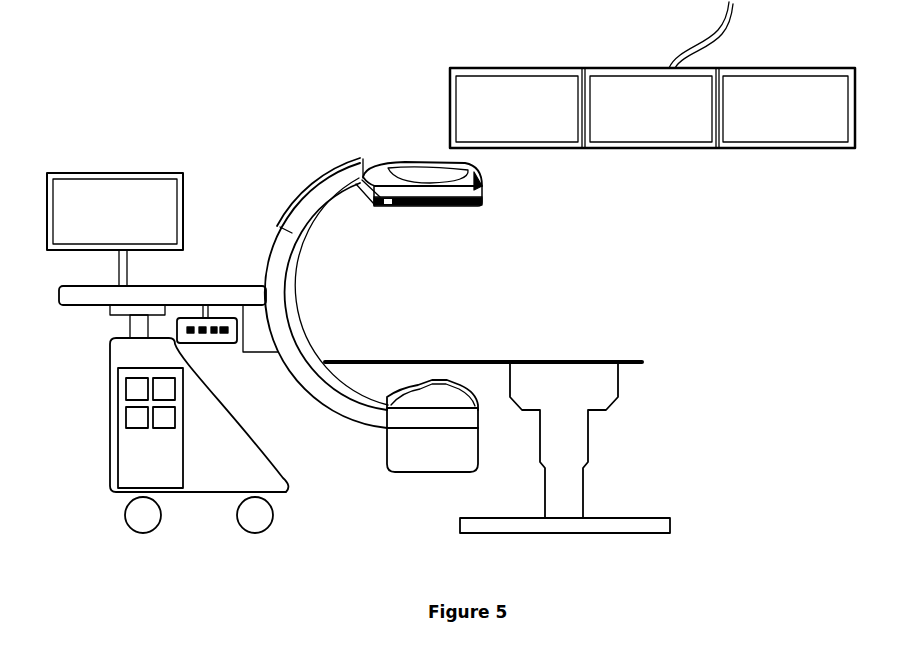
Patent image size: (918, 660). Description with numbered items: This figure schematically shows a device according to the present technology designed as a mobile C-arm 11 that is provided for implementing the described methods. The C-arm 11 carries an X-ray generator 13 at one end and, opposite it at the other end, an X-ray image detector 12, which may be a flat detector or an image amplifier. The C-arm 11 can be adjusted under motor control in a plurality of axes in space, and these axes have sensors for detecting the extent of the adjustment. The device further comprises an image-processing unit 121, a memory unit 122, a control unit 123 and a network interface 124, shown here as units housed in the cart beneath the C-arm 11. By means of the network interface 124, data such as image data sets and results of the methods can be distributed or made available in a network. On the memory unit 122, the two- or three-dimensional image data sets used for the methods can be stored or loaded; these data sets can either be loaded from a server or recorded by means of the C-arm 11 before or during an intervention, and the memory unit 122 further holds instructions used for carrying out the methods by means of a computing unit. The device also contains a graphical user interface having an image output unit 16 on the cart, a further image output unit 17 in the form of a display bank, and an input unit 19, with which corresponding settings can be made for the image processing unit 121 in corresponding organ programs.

The mobile C-arm 11 is at (322, 143).
The X-ray image detector 12 is at (472, 208).
The X-ray generator 13 is at (417, 455).
The image output unit 16 is at (165, 172).
The image output unit 17 is at (448, 78).
The input unit 19 is at (200, 346).
The image-processing unit 121 is at (125, 422).
The memory unit 122 is at (140, 390).
The control unit 123 is at (163, 388).
The network interface 124 is at (176, 414).